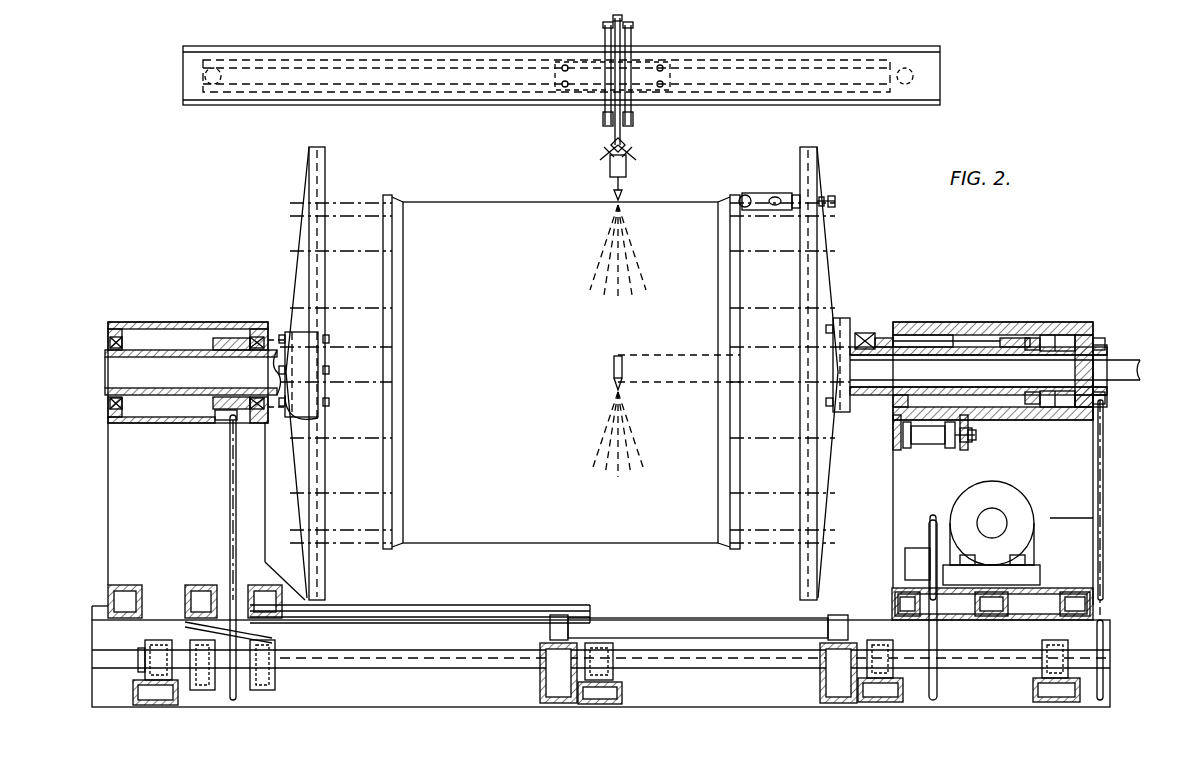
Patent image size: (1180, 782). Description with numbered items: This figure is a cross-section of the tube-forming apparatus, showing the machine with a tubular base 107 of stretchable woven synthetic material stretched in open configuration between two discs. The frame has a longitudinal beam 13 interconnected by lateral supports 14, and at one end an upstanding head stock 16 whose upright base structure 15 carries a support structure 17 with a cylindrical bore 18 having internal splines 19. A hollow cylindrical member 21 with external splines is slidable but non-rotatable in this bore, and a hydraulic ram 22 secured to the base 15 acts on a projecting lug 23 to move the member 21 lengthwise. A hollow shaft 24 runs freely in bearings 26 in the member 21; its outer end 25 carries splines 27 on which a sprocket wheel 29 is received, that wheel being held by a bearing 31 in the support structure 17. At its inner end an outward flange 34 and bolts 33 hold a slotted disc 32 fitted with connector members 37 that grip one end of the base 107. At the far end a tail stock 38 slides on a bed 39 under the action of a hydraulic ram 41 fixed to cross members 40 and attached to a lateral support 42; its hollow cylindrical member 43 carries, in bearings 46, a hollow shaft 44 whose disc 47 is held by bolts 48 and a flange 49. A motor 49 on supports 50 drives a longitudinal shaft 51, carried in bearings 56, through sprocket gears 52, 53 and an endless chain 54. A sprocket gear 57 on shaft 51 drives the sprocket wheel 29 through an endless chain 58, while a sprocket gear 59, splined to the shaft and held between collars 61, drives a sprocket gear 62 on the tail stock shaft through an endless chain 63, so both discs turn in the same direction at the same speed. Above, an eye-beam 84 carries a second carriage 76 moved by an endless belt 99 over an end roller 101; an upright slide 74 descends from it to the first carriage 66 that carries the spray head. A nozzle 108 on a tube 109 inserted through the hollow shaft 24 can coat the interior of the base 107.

The longitudinal beam 13 is at (675, 698).
The lateral supports 14 is at (133, 692).
The upright base structure 15 is at (1093, 488).
The head stock 16 is at (1075, 518).
The support structure 17 is at (1070, 322).
The longitudinal cylindrical bore 18 is at (1055, 335).
The internal splines 19 is at (893, 400).
The hollow cylindrical member 21 is at (865, 333).
The hydraulic ram 22 is at (920, 444).
The projecting lug 23 is at (972, 432).
The hollow shaft 24 is at (940, 347).
The outer end 25 is at (1107, 402).
The bearings 26 is at (885, 338).
The splines 27 is at (1085, 407).
The sprocket wheel 29 is at (1107, 348).
The bearing 31 is at (1100, 338).
The disc 32 is at (817, 185).
The bolts 33 is at (848, 410).
The outward flange 34 is at (845, 320).
The connector member 37 is at (760, 193).
The tail stock 38 is at (94, 461).
The bed 39 is at (390, 603).
The cross members 40 is at (540, 684).
The hydraulic ram 41 is at (610, 618).
The lateral support 42 is at (260, 585).
The hollow cylindrical member 43 is at (108, 408).
The hollow shaft 44 is at (160, 350).
The bearings 46 is at (108, 343).
The disc 47 is at (325, 165).
The bolts 48 is at (329, 338).
The motor 49 is at (318, 418).
The supports 50 is at (895, 604).
The shaft 51 is at (990, 660).
The sprocket gear 52 is at (935, 690).
The sprocket gear 53 is at (930, 530).
The endless chain 54 is at (905, 575).
The bearings 56 is at (140, 648).
The sprocket gear 57 is at (1103, 690).
The endless chain 58 is at (1103, 560).
The sprocket gear 59 is at (245, 690).
The collars 61 is at (200, 640).
The sprocket gear 62 is at (222, 420).
The endless chain 63 is at (230, 466).
The first carriage 66 is at (647, 157).
The upright slide 74 is at (630, 32).
The second carriage 76 is at (575, 56).
The eye-beam 84 is at (940, 68).
The endless belt 99 is at (905, 84).
The end roller 101 is at (213, 84).
The base 107 is at (500, 555).
The nozzle 108 is at (612, 360).
The tube 109 is at (1120, 382).